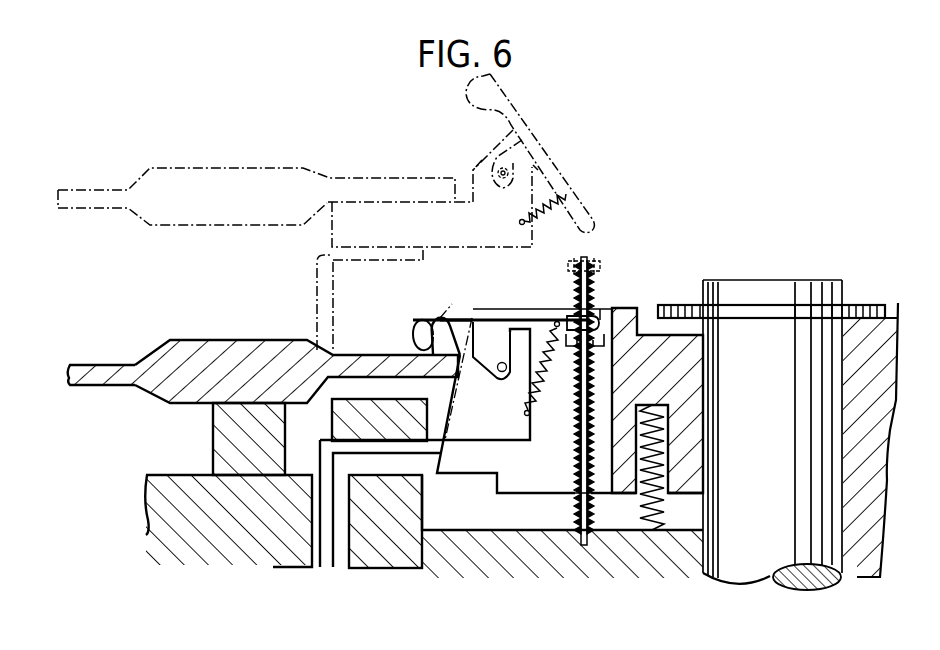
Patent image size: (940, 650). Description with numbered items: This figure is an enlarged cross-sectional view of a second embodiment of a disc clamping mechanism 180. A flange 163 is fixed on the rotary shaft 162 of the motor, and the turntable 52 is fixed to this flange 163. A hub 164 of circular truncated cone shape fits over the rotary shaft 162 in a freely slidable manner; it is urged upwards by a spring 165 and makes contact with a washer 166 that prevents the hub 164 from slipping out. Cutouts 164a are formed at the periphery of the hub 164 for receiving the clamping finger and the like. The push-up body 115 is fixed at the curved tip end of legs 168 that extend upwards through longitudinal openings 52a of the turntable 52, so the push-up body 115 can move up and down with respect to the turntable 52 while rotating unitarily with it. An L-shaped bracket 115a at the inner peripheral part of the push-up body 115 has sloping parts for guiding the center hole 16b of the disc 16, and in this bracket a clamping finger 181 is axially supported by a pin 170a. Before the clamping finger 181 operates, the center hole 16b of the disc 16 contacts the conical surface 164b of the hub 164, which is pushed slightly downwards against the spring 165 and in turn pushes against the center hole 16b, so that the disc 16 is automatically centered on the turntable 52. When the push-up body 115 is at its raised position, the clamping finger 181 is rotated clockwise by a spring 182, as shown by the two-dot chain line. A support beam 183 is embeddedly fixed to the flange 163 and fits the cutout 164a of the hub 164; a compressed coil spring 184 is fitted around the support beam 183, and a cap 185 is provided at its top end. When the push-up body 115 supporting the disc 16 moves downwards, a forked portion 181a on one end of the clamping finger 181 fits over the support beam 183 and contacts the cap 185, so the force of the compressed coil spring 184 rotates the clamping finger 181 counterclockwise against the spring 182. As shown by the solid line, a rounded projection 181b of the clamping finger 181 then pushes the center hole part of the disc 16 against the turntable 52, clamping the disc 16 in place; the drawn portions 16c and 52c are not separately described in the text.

The disc 16 is at (97, 366).
The center hole 16b is at (420, 320).
The enlarged portion of control lever 16c is at (243, 167).
The turntable 52 is at (190, 547).
The longitudinal openings 52a is at (349, 565).
The housing pedestal portion 52c is at (215, 445).
The push-up body 115 is at (330, 237).
The L-shaped bracket 115a is at (516, 490).
The rotary shaft 162 is at (758, 286).
The flange 163 is at (465, 557).
The hub 164 is at (628, 313).
The cutout 164a is at (519, 490).
The conical surface 164b is at (453, 318).
The spring 165 is at (663, 506).
The washer 166 is at (860, 303).
The legs 168 is at (327, 570).
The pin 170a is at (500, 377).
The disc clamping mechanism 180 is at (699, 144).
The clamping finger 181 is at (550, 162).
The forked portion 181a is at (597, 315).
The projection 181b is at (414, 338).
The spring 182 is at (550, 228).
The support beam 183 is at (580, 507).
The compressed coil spring 184 is at (590, 497).
The cap 185 is at (600, 263).